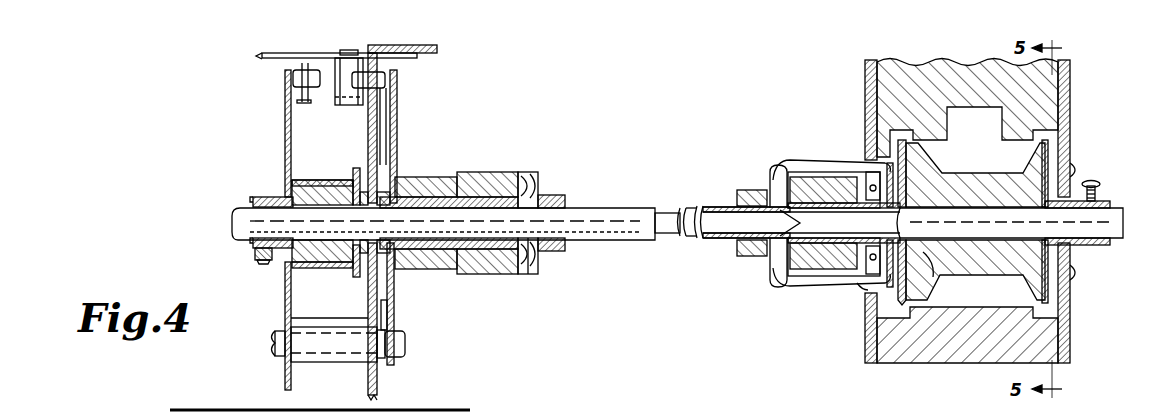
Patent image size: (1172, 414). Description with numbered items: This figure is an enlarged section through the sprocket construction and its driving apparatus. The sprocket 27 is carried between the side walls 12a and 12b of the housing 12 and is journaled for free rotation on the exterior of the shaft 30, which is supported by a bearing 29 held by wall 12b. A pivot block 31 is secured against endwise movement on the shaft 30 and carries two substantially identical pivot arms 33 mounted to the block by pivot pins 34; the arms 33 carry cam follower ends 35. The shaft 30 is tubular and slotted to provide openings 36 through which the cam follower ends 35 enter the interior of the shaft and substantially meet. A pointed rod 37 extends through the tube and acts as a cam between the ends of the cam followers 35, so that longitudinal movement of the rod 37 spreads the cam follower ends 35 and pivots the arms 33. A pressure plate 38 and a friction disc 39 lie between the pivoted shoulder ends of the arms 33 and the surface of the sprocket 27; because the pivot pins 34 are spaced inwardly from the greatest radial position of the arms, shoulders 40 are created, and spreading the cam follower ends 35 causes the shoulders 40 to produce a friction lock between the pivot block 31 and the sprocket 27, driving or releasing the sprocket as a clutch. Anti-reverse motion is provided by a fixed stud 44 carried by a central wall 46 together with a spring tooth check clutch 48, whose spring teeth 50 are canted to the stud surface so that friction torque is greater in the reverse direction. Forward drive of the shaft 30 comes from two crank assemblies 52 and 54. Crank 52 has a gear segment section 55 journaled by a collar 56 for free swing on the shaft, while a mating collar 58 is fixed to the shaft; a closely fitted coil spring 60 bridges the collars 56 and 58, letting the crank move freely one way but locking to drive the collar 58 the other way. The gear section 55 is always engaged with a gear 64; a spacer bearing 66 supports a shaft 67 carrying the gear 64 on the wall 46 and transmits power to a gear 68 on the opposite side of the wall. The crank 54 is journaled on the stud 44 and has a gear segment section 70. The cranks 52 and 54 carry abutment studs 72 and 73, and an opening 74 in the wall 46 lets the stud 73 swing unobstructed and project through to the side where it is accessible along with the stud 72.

The housing 12 is at (1078, 99).
The side wall 12a is at (865, 347).
The side wall 12b is at (1070, 140).
The sprocket 27 is at (988, 173).
The bearing 29 is at (1095, 245).
The shaft 30 is at (610, 207).
The pivot block 31 is at (790, 268).
The pivot arms 33 is at (822, 160).
The pivot pins 34 is at (866, 175).
The cam follower ends 35 is at (772, 175).
The openings 36 is at (800, 223).
The rod 37 is at (665, 235).
The pressure plate 38 is at (893, 165).
The friction disc 39 is at (928, 278).
The shoulders 40 is at (865, 282).
The fixed stud 44 is at (505, 178).
The central wall 46 is at (370, 143).
The spring tooth check clutch 48 is at (538, 180).
The spring teeth 50 is at (525, 265).
The crank 52 is at (286, 152).
The crank 54 is at (398, 140).
The gear segment section 55 is at (305, 265).
The collar 56 is at (307, 183).
The mating collar 58 is at (352, 270).
The coil spring 60 is at (278, 255).
The gear 64 is at (284, 380).
The spacer bearing 66 is at (320, 355).
The shaft 67 is at (406, 340).
The gear 68 is at (395, 316).
The gear segment section 70 is at (397, 295).
The abutment stud 72 is at (292, 80).
The abutment stud 73 is at (388, 80).
The opening 74 is at (382, 92).